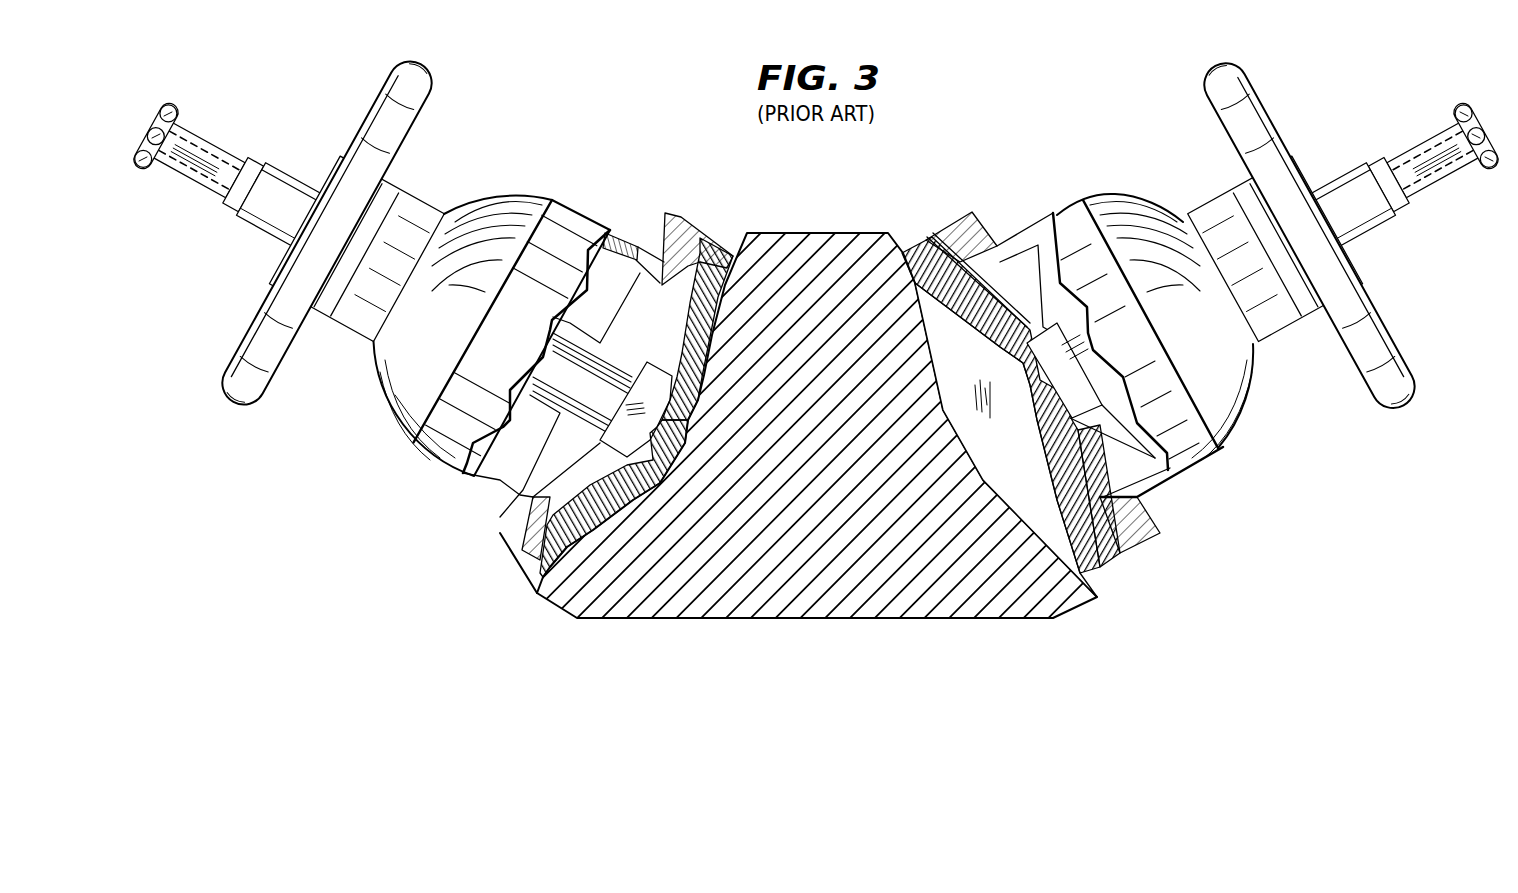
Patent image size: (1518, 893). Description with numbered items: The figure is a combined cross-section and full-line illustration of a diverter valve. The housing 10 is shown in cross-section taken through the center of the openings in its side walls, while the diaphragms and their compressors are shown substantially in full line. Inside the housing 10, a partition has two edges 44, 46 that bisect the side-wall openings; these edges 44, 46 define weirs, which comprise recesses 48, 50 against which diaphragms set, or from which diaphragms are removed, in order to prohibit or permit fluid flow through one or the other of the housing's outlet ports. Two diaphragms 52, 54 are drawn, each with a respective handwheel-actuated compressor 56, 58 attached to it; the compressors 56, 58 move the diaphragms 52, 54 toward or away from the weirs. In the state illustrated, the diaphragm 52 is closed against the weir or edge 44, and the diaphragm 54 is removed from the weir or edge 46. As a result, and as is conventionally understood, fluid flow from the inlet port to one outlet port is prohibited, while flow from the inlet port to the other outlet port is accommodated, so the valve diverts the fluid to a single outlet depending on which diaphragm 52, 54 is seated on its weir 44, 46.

The housing 10 is at (828, 237).
The edge 44 is at (667, 455).
The edge 46 is at (948, 420).
The recess 48 is at (693, 400).
The recess 50 is at (962, 432).
The diaphragm 52 is at (723, 250).
The diaphragm 54 is at (1097, 572).
The handwheel-actuated compressor 56 is at (400, 388).
The handwheel-actuated compressor 58 is at (1240, 407).